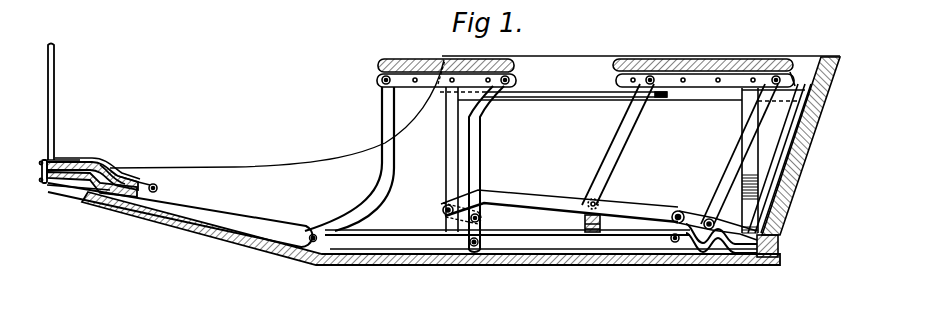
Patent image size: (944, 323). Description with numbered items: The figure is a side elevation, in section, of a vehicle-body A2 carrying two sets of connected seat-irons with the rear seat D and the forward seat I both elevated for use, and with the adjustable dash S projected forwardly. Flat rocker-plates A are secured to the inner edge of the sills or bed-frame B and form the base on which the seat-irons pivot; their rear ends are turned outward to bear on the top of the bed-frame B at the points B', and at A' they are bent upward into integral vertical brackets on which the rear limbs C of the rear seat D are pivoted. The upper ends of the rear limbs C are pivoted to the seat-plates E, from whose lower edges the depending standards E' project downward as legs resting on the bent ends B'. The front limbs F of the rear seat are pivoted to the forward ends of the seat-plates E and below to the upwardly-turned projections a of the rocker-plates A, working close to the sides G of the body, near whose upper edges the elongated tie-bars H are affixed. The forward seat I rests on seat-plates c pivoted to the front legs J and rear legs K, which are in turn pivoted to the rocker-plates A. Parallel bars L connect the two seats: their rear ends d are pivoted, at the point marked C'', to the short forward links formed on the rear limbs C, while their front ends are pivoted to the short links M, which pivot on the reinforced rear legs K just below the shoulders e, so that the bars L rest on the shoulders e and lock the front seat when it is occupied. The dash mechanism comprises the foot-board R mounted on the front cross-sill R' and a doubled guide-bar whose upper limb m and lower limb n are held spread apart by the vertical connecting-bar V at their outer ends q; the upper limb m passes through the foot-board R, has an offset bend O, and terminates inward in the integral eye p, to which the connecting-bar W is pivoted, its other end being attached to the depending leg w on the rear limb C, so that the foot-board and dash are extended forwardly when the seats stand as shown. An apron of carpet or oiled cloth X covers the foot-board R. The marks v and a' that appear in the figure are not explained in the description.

The adjustable dash S is at (56, 108).
The outer end of upper limb q is at (54, 158).
The vertical connecting-bar V is at (42, 176).
The apron of carpet or oiled cloth X is at (80, 158).
The upper limb of guide-bar m is at (82, 166).
The foot-board R is at (112, 163).
The offset bend O is at (131, 165).
The connection v is at (149, 175).
The integral loop or eye p is at (160, 188).
The lower limb of guide-bar n is at (78, 191).
The front cross-sill R' is at (92, 196).
The connecting-bar W is at (182, 215).
The front legs of front seat J is at (380, 177).
The seat-plates of front seat c is at (277, 114).
The forward seat I is at (440, 58).
The sides of vehicle-body G is at (602, 160).
The rear legs of front seat K is at (481, 164).
The elongated tie-bars H is at (600, 98).
The parallel bars L is at (559, 200).
The upwardly-turned projections of rocker-plates a is at (607, 210).
The short links M is at (443, 212).
The offset shoulder e is at (480, 218).
The front limbs of rear seat F is at (638, 125).
The rear-seat plates E is at (703, 63).
The rear seat D is at (641, 47).
The depending standards E' is at (739, 154).
The corner fitting a' is at (799, 77).
The rear limbs of rear seat C is at (773, 161).
The vehicle-body A2 is at (811, 155).
The pivot pin C'' is at (675, 205).
The brackets of rocker-plates A' is at (696, 209).
The bent ends of rocker-plates B' is at (761, 228).
The sills or bed-frame B is at (739, 256).
The depending leg w is at (675, 243).
The rear ends of parallel bars d is at (668, 237).
The rocker-plates A is at (431, 240).